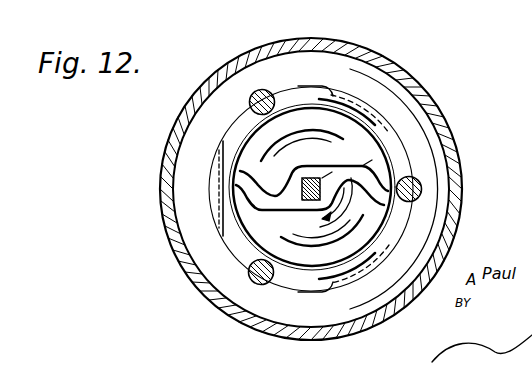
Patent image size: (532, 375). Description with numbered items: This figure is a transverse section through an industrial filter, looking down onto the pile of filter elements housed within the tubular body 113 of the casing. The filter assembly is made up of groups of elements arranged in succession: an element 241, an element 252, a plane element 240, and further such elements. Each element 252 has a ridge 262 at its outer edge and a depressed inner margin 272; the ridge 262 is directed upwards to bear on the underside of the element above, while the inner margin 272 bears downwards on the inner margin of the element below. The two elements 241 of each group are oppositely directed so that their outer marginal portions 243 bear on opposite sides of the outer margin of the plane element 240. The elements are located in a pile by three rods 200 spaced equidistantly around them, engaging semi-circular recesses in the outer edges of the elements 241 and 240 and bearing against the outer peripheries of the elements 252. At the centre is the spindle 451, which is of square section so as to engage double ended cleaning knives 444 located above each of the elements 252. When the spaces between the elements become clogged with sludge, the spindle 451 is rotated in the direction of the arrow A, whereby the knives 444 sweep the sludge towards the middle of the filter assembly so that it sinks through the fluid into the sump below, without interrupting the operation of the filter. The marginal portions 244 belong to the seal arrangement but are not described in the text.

The tubular body 113 is at (385, 155).
The rods 200 is at (252, 97).
The plane element 240 is at (213, 163).
The element 241 is at (290, 280).
The outer marginal portions 243 is at (350, 110).
The seal strip 244 is at (318, 176).
The element 252 is at (257, 154).
The ridge 262 is at (372, 160).
The depressed inner margin 272 is at (273, 147).
The double ended cleaning knives 444 is at (343, 212).
The spindle 451 is at (322, 178).